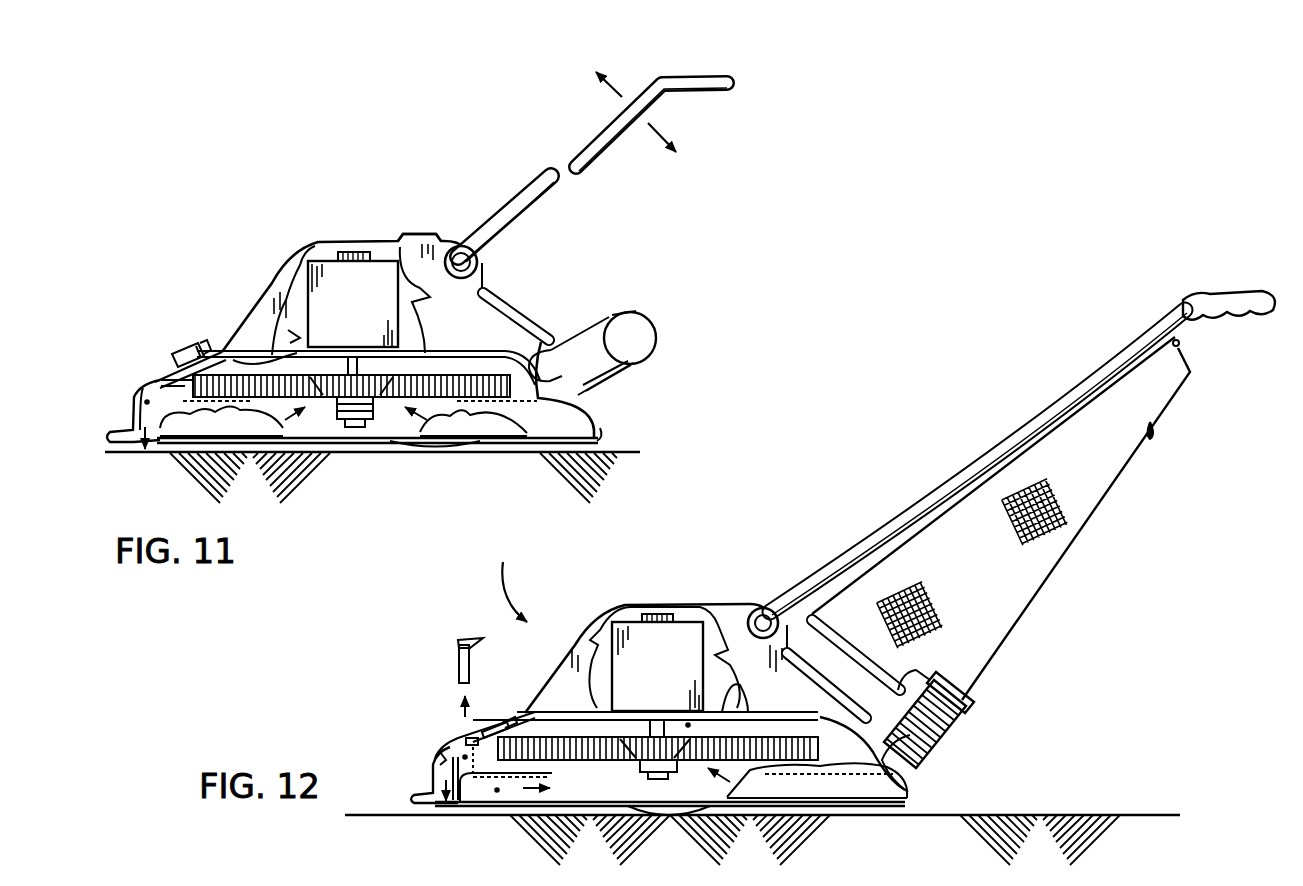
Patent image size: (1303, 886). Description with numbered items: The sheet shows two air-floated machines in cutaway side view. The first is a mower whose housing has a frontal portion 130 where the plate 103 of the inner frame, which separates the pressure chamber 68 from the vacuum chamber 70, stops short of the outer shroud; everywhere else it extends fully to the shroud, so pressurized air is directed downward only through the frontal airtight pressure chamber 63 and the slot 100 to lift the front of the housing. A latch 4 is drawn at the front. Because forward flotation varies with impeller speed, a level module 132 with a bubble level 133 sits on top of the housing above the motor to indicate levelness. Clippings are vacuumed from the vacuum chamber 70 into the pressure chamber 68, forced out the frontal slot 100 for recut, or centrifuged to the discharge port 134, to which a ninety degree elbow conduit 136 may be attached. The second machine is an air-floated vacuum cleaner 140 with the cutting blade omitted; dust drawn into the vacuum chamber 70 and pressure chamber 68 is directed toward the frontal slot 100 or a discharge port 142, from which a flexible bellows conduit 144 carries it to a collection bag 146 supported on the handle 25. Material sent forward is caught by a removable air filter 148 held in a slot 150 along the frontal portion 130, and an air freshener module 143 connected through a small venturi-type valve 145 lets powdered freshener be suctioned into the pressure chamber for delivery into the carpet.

In FIG. 11, the latch 4 is at (181, 345).
In FIG. 12, the handle 25 is at (962, 470).
In FIG. 11, the airtight pressure chamber 63 is at (132, 418).
In FIG. 12, the pressure chamber 68 is at (688, 727).
In FIG. 12, the vacuum chamber 70 is at (497, 790).
In FIG. 11, the slot 100 is at (137, 447).
In FIG. 12, the slot 100 is at (447, 803).
In FIG. 11, the plate 103 is at (533, 400).
In FIG. 12, the plate 103 is at (850, 777).
In FIG. 11, the frontal portion 130 is at (147, 383).
In FIG. 12, the frontal portion 130 is at (443, 747).
In FIG. 11, the level module 132 is at (400, 236).
In FIG. 11, the bubble level 133 is at (382, 237).
In FIG. 11, the discharge port 134 is at (532, 362).
In FIG. 11, the 90 degree elbow conduit 136 is at (607, 323).
In FIG. 12, the air-floated vacuum cleaner 140 is at (507, 579).
In FIG. 12, the discharge port 142 is at (903, 768).
In FIG. 12, the air freshener module 143 is at (503, 722).
In FIG. 12, the flexible bellows conduit 144 is at (947, 733).
In FIG. 12, the venturi-type valve 145 is at (473, 737).
In FIG. 12, the collection bag 146 is at (1058, 556).
In FIG. 12, the removable air filter 148 is at (468, 640).
In FIG. 12, the slot 150 is at (448, 770).